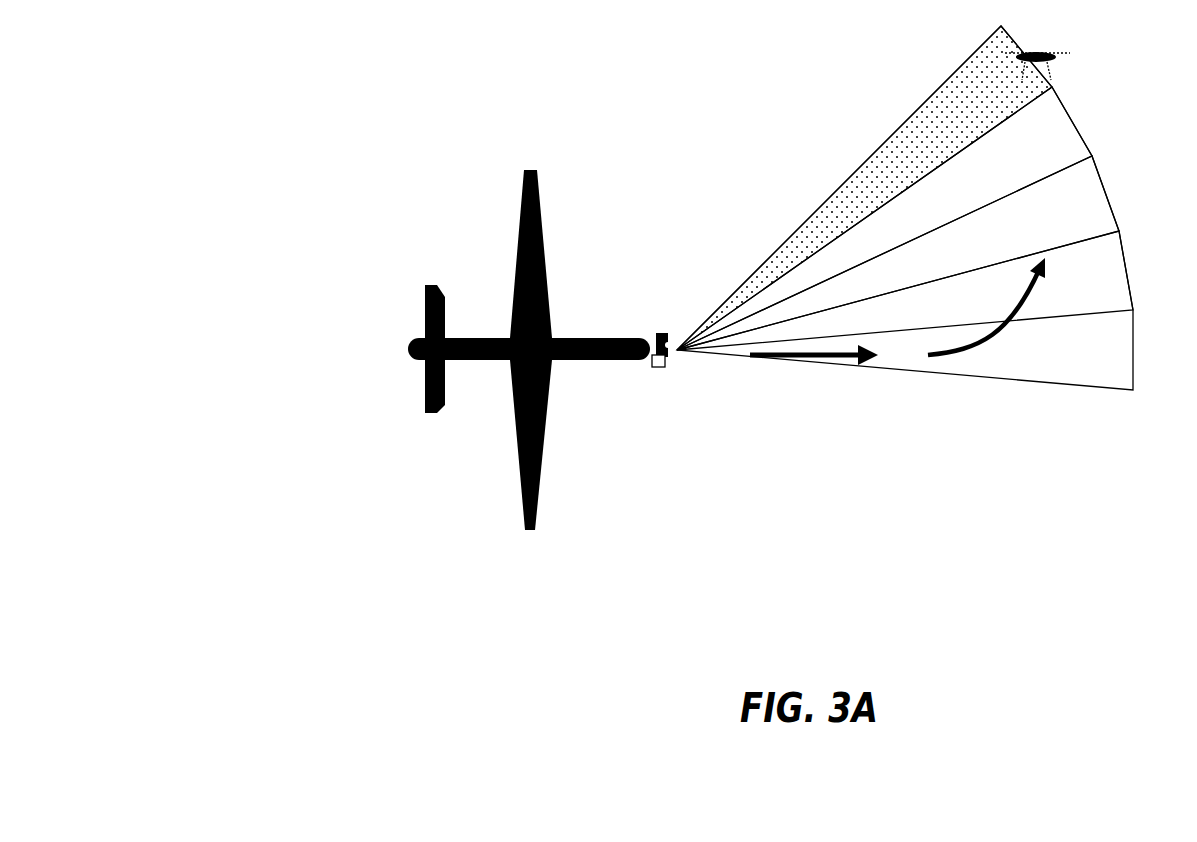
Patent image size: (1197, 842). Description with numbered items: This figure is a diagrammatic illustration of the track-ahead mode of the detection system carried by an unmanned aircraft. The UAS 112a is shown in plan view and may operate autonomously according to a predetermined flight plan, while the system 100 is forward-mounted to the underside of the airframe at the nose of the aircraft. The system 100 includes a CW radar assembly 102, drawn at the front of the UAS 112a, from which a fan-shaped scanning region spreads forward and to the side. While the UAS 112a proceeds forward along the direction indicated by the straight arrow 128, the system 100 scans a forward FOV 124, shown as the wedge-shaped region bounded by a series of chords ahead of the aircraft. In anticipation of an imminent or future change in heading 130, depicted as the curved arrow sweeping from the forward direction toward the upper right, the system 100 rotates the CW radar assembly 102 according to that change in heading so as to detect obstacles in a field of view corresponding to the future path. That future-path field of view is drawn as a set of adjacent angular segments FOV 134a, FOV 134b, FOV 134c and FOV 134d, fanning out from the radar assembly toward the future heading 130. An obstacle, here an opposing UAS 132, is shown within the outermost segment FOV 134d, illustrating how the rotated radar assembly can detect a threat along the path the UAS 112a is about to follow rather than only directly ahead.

The system 100 is at (645, 377).
The CW radar assembly 102 is at (663, 333).
The UAS 112a is at (530, 170).
The forward FOV 124 is at (1110, 378).
The forward direction 128 is at (832, 360).
The change in heading 130 is at (987, 350).
The opposing UAS 132 is at (1035, 45).
The FOV 134a is at (1110, 283).
The FOV 134b is at (1095, 203).
The FOV 134c is at (1058, 133).
The FOV 134d is at (962, 75).